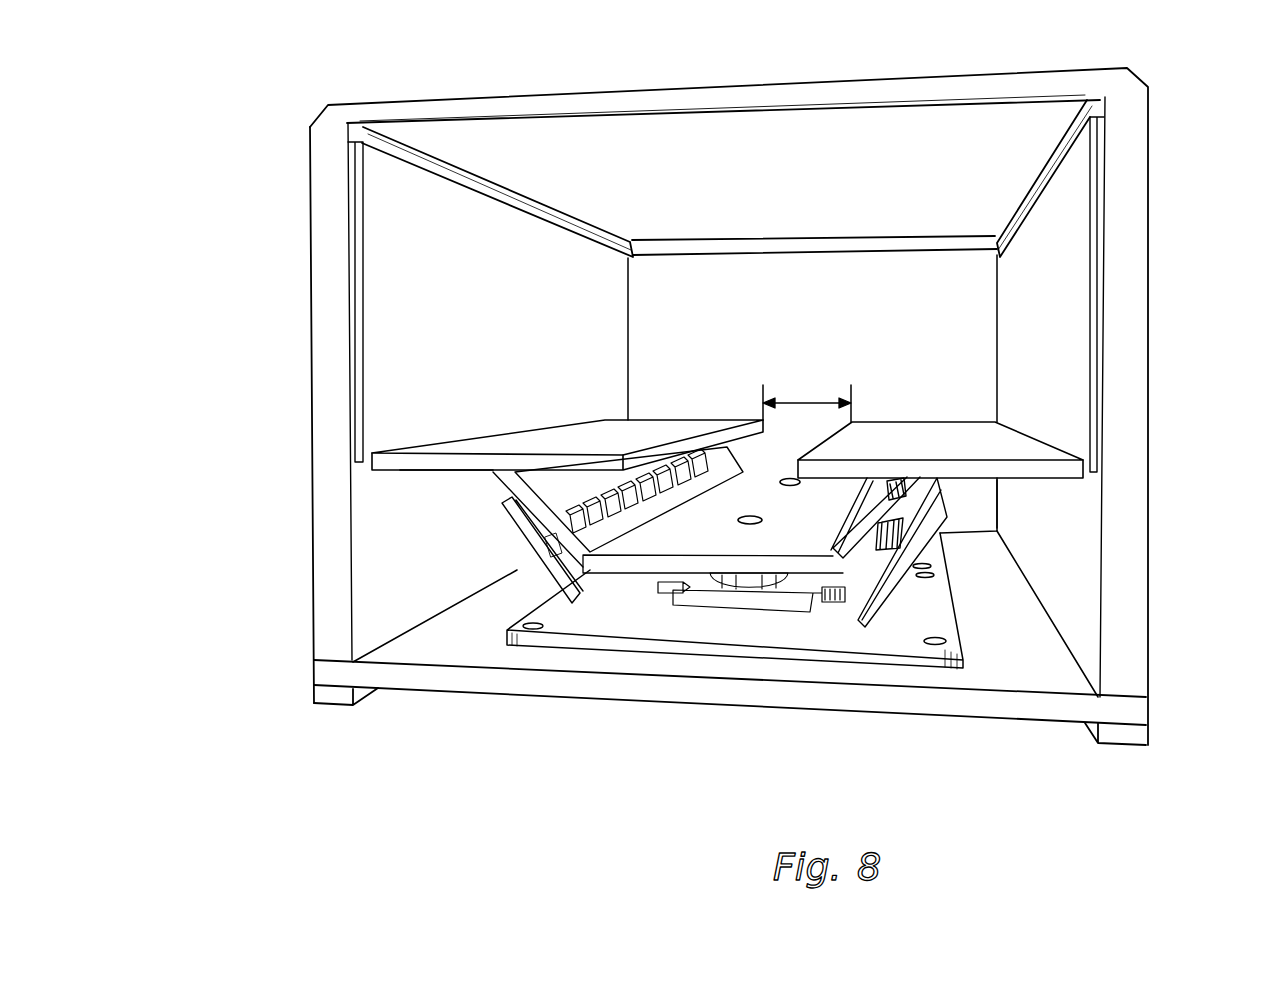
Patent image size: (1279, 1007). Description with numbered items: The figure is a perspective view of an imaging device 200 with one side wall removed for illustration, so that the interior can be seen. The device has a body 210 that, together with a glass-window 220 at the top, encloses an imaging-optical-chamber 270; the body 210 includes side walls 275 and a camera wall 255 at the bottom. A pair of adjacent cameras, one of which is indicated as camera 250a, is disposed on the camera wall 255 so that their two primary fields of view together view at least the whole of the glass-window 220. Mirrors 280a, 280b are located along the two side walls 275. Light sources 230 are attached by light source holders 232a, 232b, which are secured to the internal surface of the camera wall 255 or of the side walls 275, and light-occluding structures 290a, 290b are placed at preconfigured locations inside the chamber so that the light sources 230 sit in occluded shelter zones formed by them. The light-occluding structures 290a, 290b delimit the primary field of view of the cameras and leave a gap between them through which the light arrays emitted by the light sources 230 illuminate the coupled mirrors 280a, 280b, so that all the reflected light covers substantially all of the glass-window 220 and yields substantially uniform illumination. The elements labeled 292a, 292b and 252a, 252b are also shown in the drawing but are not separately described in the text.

The imaging device 200 is at (290, 131).
The body 210 is at (1150, 194).
The glass-window 220 is at (632, 152).
The imaging-optical-chamber 270 is at (810, 292).
The side wall 275 is at (315, 253).
The mirror 280a is at (390, 362).
The mirror 280b is at (1065, 315).
The light-occluding structure 290a is at (428, 473).
The light-occluding structure 290b is at (1015, 487).
The left shelf 292a is at (668, 430).
The right shelf 292b is at (938, 430).
The light source holder 232a is at (533, 567).
The light source holder 232b is at (885, 575).
The light source 230 is at (665, 503).
The camera 250a is at (728, 590).
The fastener 252a is at (752, 524).
The fastener 252b is at (784, 486).
The camera wall 255 is at (568, 638).